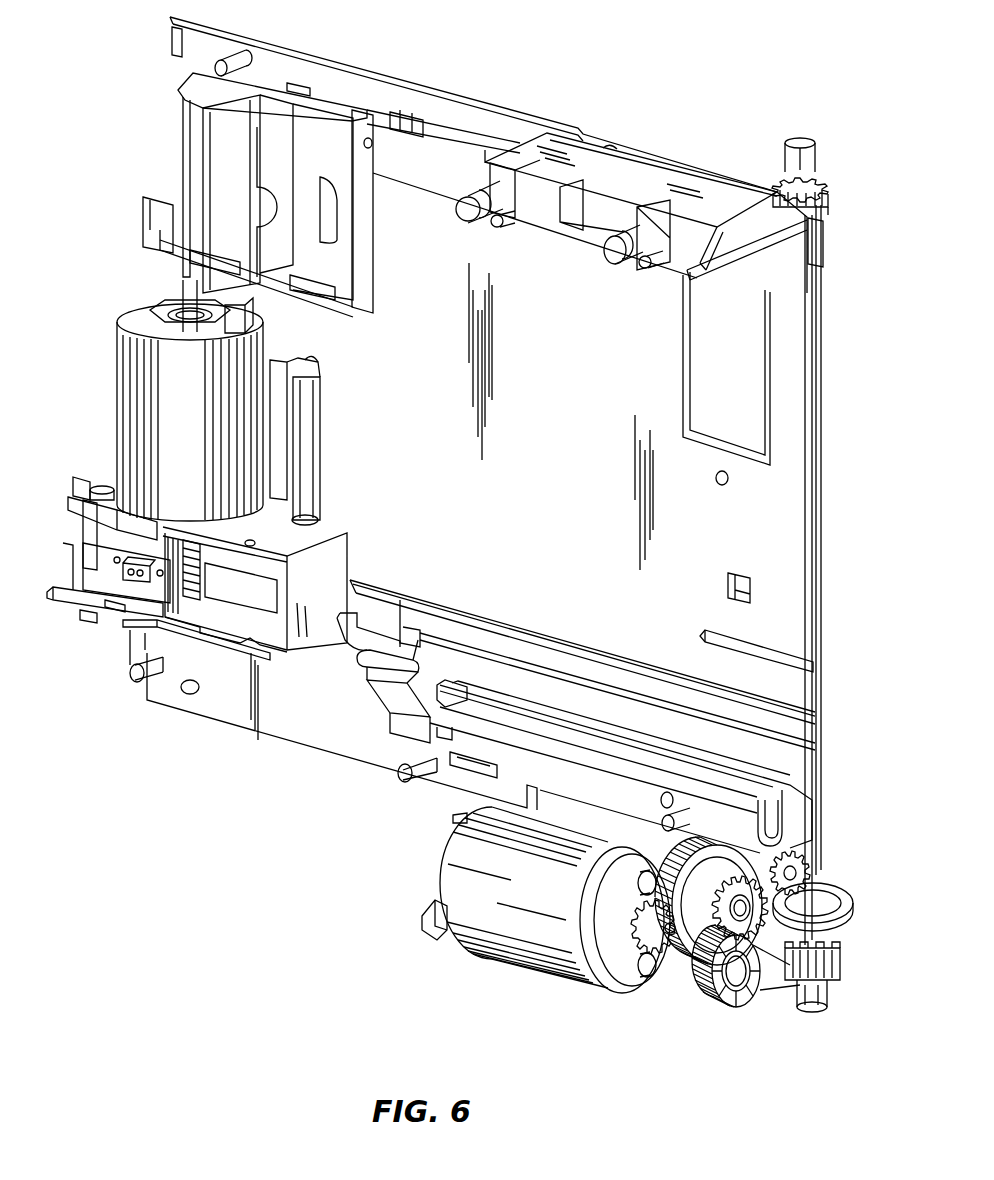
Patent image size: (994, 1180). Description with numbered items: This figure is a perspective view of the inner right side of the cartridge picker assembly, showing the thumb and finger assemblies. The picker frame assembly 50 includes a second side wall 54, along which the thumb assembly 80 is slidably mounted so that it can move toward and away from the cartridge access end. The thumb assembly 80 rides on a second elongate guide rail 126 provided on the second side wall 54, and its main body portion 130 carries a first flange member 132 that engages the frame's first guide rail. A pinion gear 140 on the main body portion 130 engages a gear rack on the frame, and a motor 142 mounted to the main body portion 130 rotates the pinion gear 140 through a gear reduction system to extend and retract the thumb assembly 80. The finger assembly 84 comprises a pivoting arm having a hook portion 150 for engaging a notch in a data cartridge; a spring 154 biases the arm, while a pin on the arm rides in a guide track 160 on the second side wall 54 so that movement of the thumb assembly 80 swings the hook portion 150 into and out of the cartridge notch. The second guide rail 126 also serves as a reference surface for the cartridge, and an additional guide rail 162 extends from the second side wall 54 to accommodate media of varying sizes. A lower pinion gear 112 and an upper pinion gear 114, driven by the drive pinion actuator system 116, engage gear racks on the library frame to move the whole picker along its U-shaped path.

The picker frame assembly 50 is at (508, 106).
The second side wall 54 is at (356, 68).
The thumb assembly 80 is at (150, 400).
The finger assembly 84 is at (370, 646).
The lower pinion gear 112 is at (836, 960).
The upper pinion gear 114 is at (828, 186).
The drive pinion actuator system 116 is at (438, 872).
The second elongate guide rail 126 is at (538, 630).
The main body portion 130 is at (336, 595).
The first flange member 132 is at (60, 590).
The pinion gear 140 is at (150, 642).
The motor 142 is at (117, 346).
The hook portion 150 is at (408, 630).
The spring 154 is at (318, 455).
The guide track 160 is at (560, 740).
The additional guide rail 162 is at (810, 655).